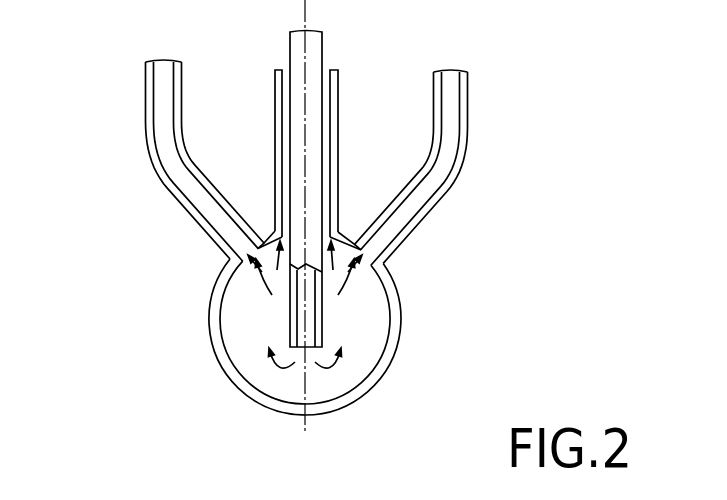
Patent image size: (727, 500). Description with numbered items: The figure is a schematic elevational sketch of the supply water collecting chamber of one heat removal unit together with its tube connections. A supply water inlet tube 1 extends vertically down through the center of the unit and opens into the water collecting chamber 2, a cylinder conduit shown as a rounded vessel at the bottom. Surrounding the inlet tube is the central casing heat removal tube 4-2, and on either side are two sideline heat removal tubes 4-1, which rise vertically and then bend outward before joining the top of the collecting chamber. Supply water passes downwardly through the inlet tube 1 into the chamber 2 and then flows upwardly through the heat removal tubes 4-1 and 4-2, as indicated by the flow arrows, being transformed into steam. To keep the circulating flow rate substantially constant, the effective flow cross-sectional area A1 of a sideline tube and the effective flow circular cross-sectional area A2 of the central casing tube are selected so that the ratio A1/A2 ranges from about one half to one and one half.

The supply water inlet tube 1 is at (305, 55).
The water collecting chamber 2 is at (368, 382).
The sideline heat removal tube 4-1 is at (153, 132).
The central casing heat removal tube 4-2 is at (275, 73).
The effective flow cross-sectional area of sideline heat removal tube A1 is at (380, 240).
The effective flow circular cross-sectional area of central casing heat exchange tub A2 is at (285, 192).